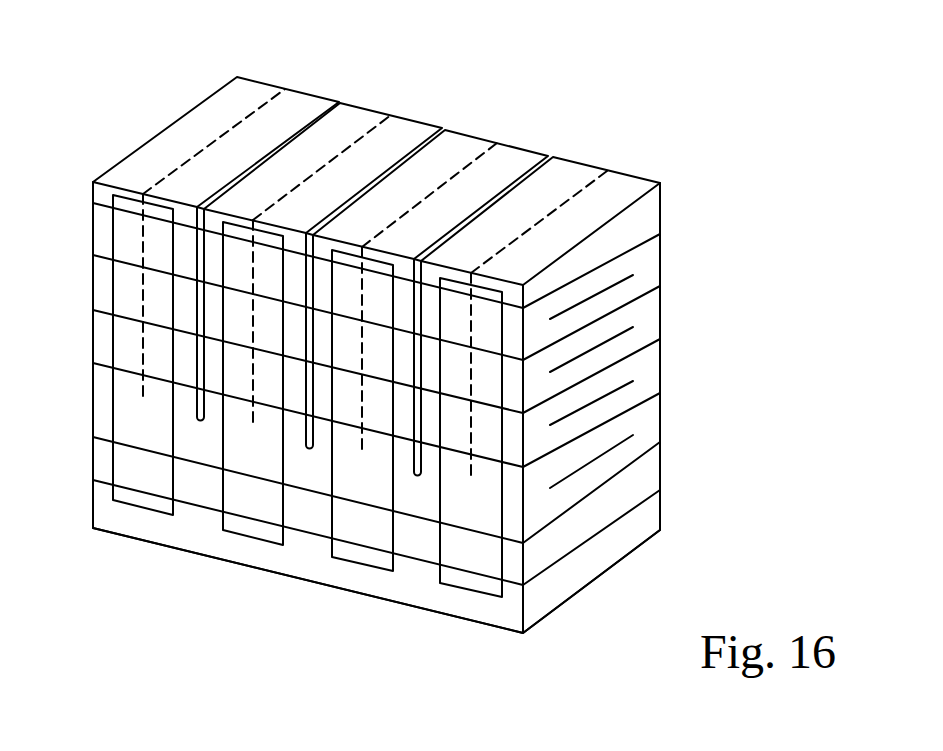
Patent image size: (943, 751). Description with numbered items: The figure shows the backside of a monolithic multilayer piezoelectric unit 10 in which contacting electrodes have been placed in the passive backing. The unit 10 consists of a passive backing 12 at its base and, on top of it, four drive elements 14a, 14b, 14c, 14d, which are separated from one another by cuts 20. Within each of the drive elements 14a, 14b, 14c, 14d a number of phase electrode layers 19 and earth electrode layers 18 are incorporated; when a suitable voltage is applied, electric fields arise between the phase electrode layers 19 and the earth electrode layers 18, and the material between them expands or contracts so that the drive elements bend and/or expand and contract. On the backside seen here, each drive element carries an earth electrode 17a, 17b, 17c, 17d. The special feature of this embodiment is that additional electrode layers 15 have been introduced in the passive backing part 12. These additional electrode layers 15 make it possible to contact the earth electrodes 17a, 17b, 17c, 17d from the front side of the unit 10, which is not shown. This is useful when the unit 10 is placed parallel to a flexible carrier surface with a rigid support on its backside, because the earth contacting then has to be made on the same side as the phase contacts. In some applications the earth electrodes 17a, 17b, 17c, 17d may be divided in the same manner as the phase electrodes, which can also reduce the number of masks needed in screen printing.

The monolithic multilayer unit 10 is at (713, 172).
The passive backing 12 is at (575, 583).
The drive element 14a is at (632, 193).
The drive element 14b is at (515, 170).
The drive element 14c is at (408, 138).
The drive element 14d is at (175, 137).
The additional electrode layers 15 is at (614, 474).
The earth electrode 17a is at (465, 558).
The earth electrode 17b is at (357, 532).
The earth electrode 17c is at (247, 503).
The earth electrode 17d is at (138, 477).
The earth electrode layers 18 is at (626, 336).
The phase electrode layers 19 is at (617, 422).
The cuts 20 is at (198, 397).